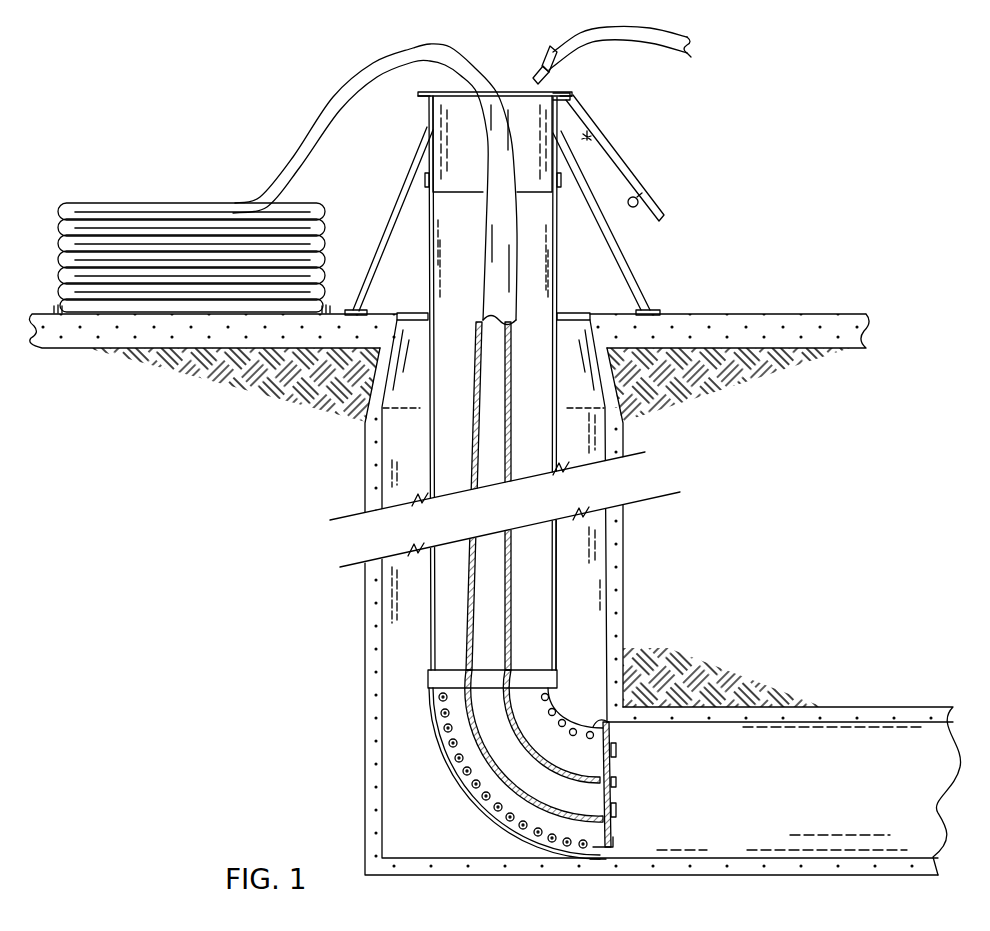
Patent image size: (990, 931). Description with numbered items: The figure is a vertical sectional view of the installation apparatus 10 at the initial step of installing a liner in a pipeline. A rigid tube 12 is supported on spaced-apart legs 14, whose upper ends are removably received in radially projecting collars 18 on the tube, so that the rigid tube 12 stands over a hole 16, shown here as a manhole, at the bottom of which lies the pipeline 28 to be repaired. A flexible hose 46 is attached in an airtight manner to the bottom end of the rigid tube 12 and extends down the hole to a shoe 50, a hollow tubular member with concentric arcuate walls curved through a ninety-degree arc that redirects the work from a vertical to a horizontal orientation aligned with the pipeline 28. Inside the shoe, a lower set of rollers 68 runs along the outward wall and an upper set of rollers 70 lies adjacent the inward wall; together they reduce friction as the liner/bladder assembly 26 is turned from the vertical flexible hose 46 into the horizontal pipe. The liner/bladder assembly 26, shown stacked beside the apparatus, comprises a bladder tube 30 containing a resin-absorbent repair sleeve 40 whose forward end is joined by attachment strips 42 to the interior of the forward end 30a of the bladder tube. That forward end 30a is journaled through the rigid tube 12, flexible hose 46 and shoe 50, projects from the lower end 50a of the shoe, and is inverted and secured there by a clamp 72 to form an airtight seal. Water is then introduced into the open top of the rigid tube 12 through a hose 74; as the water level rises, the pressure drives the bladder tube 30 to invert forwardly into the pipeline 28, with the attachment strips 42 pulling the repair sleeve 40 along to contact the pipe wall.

The installation apparatus 10 is at (570, 470).
The rigid tube 12 is at (420, 113).
The legs 14 is at (637, 263).
The hole 16 is at (587, 435).
The radially projecting collars 18 is at (428, 127).
The liner/bladder assembly 26 is at (134, 192).
The pipeline 28 is at (853, 743).
The bladder tube 30 is at (511, 643).
The forward end of bladder tube 30a is at (599, 718).
The repair sleeve 40 is at (493, 628).
The attachment strips 42 is at (614, 813).
The flexible hose 46 is at (560, 540).
The shoe 50 is at (556, 753).
The lower end of shoe 50a is at (593, 866).
The lower rollers 68 is at (443, 760).
The upper rollers 70 is at (590, 735).
The clamp 72 is at (601, 713).
The hose 74 is at (667, 33).